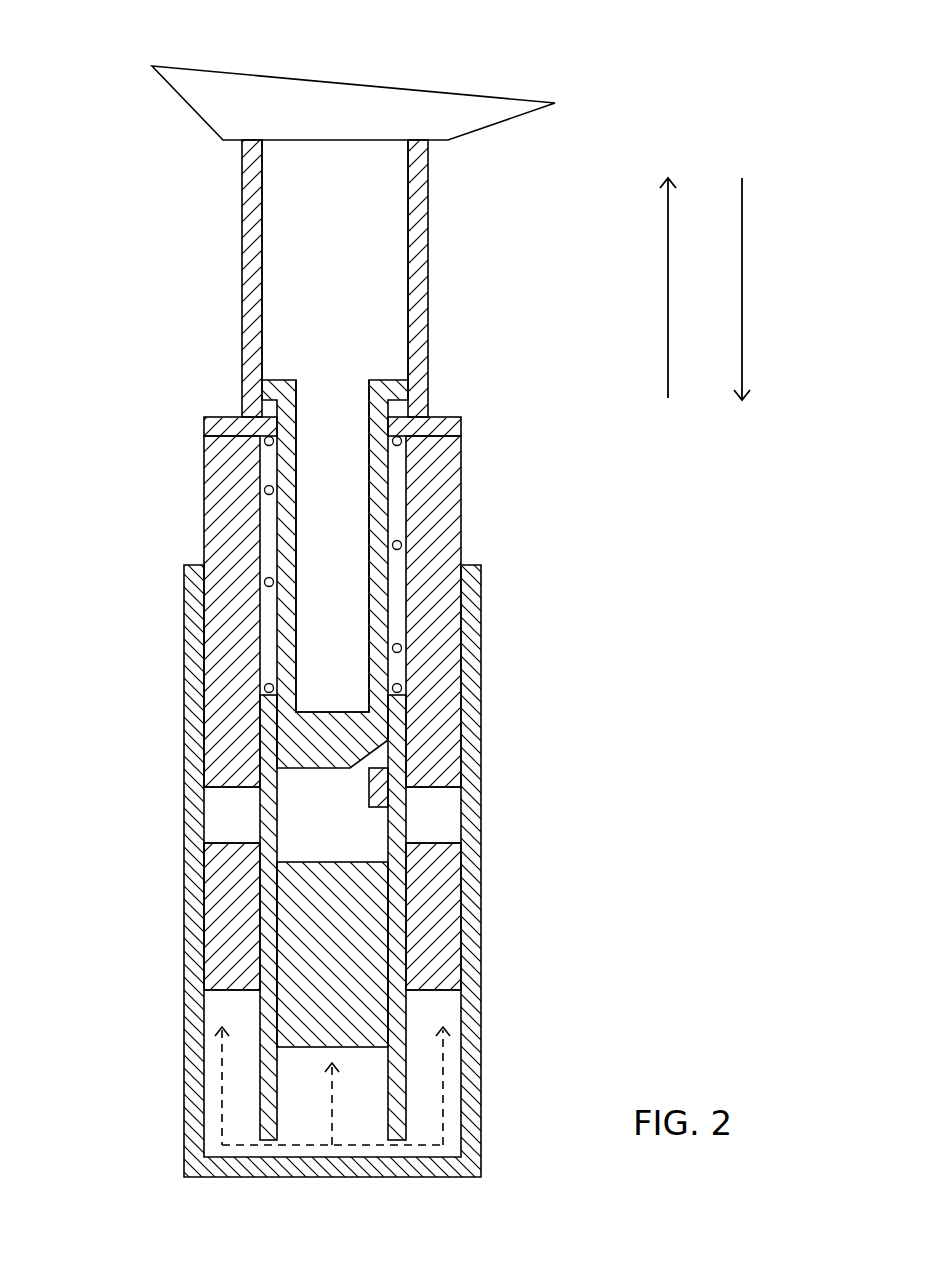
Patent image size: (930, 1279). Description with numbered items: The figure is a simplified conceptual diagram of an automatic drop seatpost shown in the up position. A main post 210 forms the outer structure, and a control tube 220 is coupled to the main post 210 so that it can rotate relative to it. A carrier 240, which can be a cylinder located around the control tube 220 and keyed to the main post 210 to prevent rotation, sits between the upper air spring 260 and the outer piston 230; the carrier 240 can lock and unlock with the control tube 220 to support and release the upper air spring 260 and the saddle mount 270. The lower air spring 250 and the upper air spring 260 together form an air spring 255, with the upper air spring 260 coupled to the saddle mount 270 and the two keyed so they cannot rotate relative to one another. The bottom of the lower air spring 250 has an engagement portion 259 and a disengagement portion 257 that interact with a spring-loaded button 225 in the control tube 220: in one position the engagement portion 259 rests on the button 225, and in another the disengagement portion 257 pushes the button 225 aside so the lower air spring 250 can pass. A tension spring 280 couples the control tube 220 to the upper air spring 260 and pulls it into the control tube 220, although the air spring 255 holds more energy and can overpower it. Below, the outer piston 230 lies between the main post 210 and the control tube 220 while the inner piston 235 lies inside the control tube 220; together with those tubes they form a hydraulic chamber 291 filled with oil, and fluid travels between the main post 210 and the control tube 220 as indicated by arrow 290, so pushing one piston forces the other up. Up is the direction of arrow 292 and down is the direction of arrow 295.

The main post 210 is at (184, 710).
The control tube 220 is at (260, 825).
The button 225 is at (368, 807).
The outer piston 230 is at (238, 992).
The inner piston 235 is at (368, 862).
The carrier 240 is at (205, 527).
The lower air spring 250 is at (280, 380).
The air spring 255 is at (372, 288).
The disengagement portion 257 is at (408, 783).
The engagement portion 259 is at (262, 790).
The upper air spring 260 is at (243, 215).
The saddle mount 270 is at (473, 94).
The spring 280 is at (402, 445).
The arrow 290 is at (442, 1120).
The hydraulic chamber 291 is at (238, 1082).
The arrow 292 is at (667, 306).
The arrow 295 is at (741, 197).